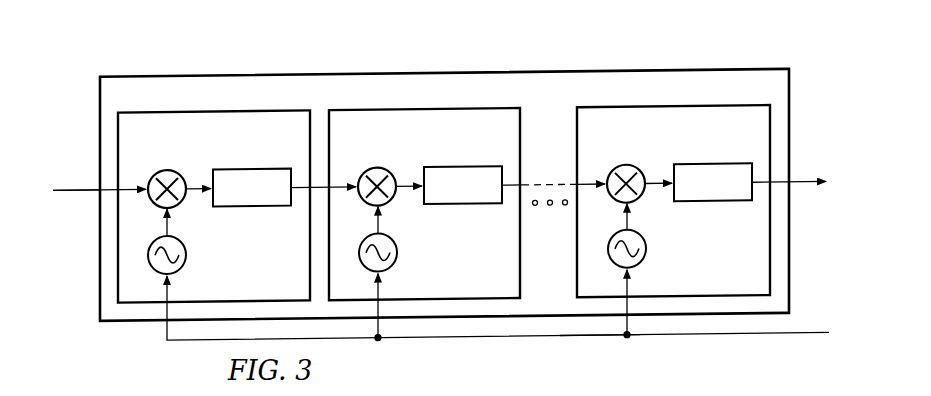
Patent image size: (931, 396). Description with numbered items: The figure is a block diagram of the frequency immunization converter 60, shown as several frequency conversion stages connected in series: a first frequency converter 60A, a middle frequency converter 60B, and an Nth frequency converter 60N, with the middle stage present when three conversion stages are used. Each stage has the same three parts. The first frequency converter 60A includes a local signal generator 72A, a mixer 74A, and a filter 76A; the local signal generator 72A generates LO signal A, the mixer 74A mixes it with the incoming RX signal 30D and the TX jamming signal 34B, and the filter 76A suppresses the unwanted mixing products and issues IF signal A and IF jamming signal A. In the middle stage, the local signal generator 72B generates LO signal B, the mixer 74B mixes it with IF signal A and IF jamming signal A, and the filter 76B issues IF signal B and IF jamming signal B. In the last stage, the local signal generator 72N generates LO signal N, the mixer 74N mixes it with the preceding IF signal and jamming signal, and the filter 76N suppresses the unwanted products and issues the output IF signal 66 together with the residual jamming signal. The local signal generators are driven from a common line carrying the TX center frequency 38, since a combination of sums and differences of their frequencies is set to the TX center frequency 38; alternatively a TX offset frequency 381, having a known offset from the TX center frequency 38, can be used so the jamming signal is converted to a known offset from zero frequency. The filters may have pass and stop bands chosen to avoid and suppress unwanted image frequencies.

The frequency immunization converter 60 is at (724, 77).
The first frequency converter 60A is at (232, 151).
The frequency converter 60B is at (481, 153).
The Nth frequency converter 60N is at (731, 151).
The mixer 74A is at (162, 176).
The mixer 74B is at (371, 178).
The mixer 74N is at (620, 176).
The filter 76A is at (256, 209).
The filter 76B is at (464, 209).
The filter 76N is at (713, 209).
The local signal generator 72A is at (186, 260).
The local signal generator 72B is at (397, 260).
The local signal generator 72N is at (646, 259).
The RX signal 30D is at (82, 189).
The TX jamming signal 34B is at (69, 195).
The IF signal 66 is at (805, 189).
The TX center frequency 38 is at (512, 343).
The TX offset frequency 381 is at (590, 343).